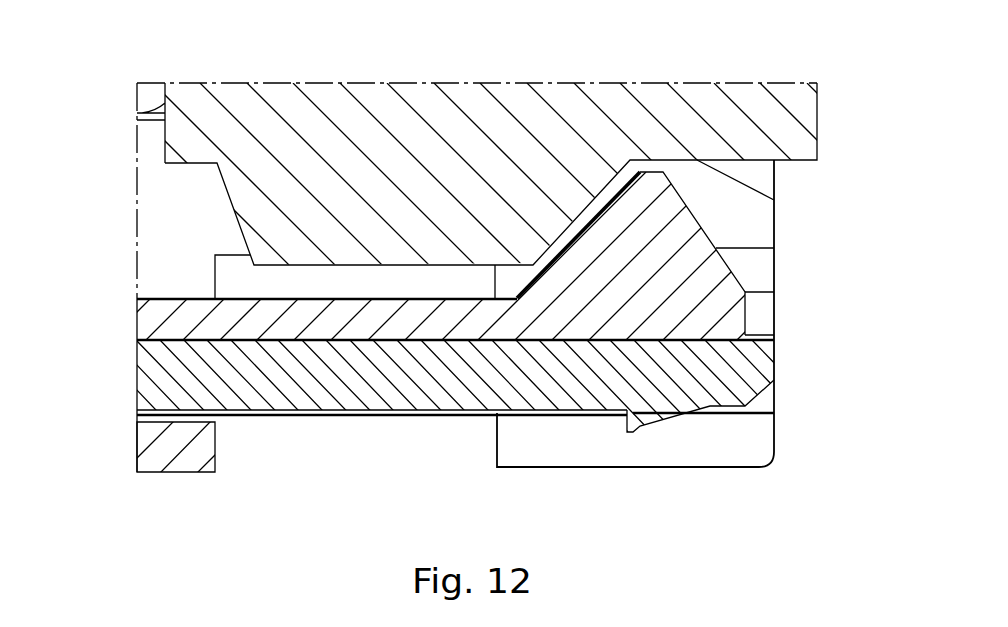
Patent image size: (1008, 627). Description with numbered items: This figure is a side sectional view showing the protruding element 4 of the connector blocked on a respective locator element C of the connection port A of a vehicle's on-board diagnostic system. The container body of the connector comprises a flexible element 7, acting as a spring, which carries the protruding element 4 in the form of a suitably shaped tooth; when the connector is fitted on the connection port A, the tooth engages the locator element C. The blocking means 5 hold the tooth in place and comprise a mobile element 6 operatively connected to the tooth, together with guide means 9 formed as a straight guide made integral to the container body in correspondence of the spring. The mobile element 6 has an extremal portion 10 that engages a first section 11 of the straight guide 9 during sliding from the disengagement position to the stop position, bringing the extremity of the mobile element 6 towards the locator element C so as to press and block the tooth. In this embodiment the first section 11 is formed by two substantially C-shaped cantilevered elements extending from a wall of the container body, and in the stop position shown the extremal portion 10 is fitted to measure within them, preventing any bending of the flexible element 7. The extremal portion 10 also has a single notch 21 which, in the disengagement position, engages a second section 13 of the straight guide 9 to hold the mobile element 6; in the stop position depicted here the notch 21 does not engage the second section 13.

The protruding element 4 is at (677, 232).
The blocking means 5 is at (362, 395).
The mobile element 6 is at (435, 372).
The flexible element 7 is at (258, 316).
The guide means 9 is at (736, 456).
The extremal portion 10 is at (753, 366).
The first section 11 is at (665, 440).
The second section 13 is at (173, 438).
The notch 21 is at (630, 432).
The connection port A is at (742, 80).
The locator element C is at (518, 242).